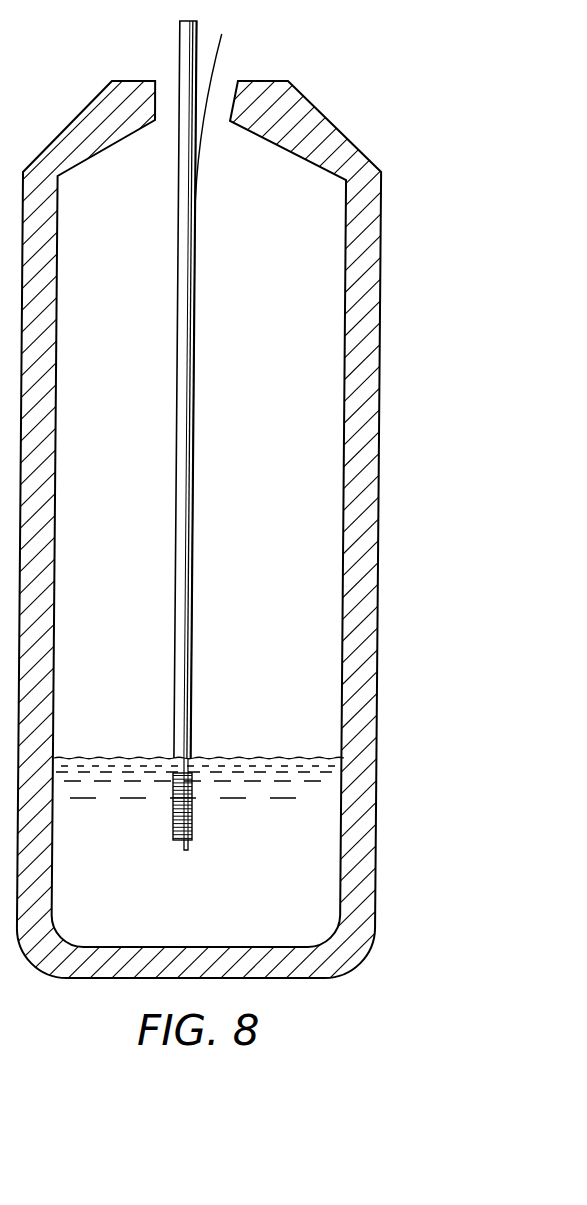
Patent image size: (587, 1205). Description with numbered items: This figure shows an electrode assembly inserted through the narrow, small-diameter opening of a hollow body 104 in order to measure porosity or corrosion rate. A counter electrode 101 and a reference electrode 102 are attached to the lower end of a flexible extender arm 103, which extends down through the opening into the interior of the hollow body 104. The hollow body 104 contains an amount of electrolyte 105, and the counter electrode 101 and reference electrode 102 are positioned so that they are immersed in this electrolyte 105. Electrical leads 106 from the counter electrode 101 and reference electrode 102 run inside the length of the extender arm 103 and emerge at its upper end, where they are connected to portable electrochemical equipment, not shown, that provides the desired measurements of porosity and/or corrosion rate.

The counter electrode 101 is at (190, 788).
The reference electrode 102 is at (188, 847).
The extender arm 103 is at (183, 313).
The hollow body 104 is at (375, 425).
The electrolyte 105 is at (313, 897).
The electrical leads 106 is at (197, 197).